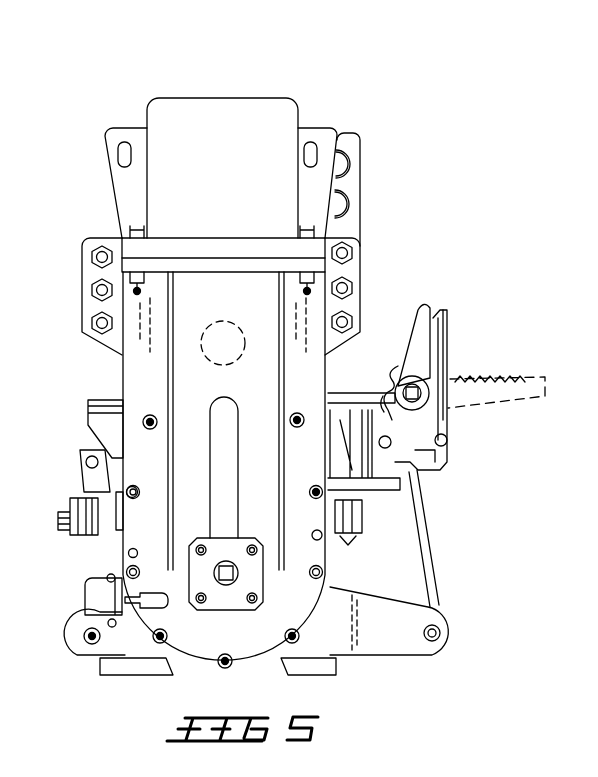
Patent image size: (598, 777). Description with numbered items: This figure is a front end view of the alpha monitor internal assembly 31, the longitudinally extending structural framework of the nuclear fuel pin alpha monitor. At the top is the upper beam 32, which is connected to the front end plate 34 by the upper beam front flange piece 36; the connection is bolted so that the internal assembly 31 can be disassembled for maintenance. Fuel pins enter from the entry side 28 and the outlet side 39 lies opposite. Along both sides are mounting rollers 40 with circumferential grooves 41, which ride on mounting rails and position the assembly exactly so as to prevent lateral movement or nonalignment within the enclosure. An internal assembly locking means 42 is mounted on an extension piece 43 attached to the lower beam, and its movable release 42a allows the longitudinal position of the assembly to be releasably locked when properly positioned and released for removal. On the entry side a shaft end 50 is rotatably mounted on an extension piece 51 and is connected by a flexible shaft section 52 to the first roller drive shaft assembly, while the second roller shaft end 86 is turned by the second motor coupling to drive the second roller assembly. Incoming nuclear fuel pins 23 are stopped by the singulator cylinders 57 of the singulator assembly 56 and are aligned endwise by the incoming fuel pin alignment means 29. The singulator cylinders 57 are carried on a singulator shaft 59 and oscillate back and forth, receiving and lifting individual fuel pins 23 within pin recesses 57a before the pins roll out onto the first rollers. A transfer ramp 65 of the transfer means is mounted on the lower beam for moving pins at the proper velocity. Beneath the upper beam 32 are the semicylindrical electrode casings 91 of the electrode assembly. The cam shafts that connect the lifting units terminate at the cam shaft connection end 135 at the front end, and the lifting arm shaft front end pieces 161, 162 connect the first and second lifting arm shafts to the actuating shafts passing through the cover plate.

The nuclear fuel pin 23 is at (528, 372).
The entry side 28 is at (437, 210).
The incoming fuel pin alignment means 29 is at (432, 305).
The internal assembly 31 is at (240, 90).
The upper beam 32 is at (283, 100).
The front end plate 34 is at (235, 316).
The upper beam front flange piece 36 is at (126, 206).
The outlet side 39 is at (48, 228).
The mounting roller 40 is at (70, 548).
The circumferential groove 41 is at (80, 496).
The internal assembly locking means 42 is at (80, 605).
The movable release 42a is at (166, 601).
The extension piece 43 is at (84, 646).
The shaft end 50 is at (445, 633).
The extension piece 51 is at (375, 607).
The flexible shaft section 52 is at (429, 549).
The singulator assembly 56 is at (397, 355).
The singulator cylinder 57 is at (386, 377).
The pin recess 57a is at (388, 386).
The singulator shaft 59 is at (419, 388).
The transfer ramp 65 is at (100, 400).
The second roller shaft end 86 is at (83, 636).
The electrode casing 91 is at (221, 362).
The cam shaft connection end 135 is at (231, 567).
The lifting arm shaft front end piece 161 is at (311, 405).
The lifting arm shaft front end piece 162 is at (147, 417).